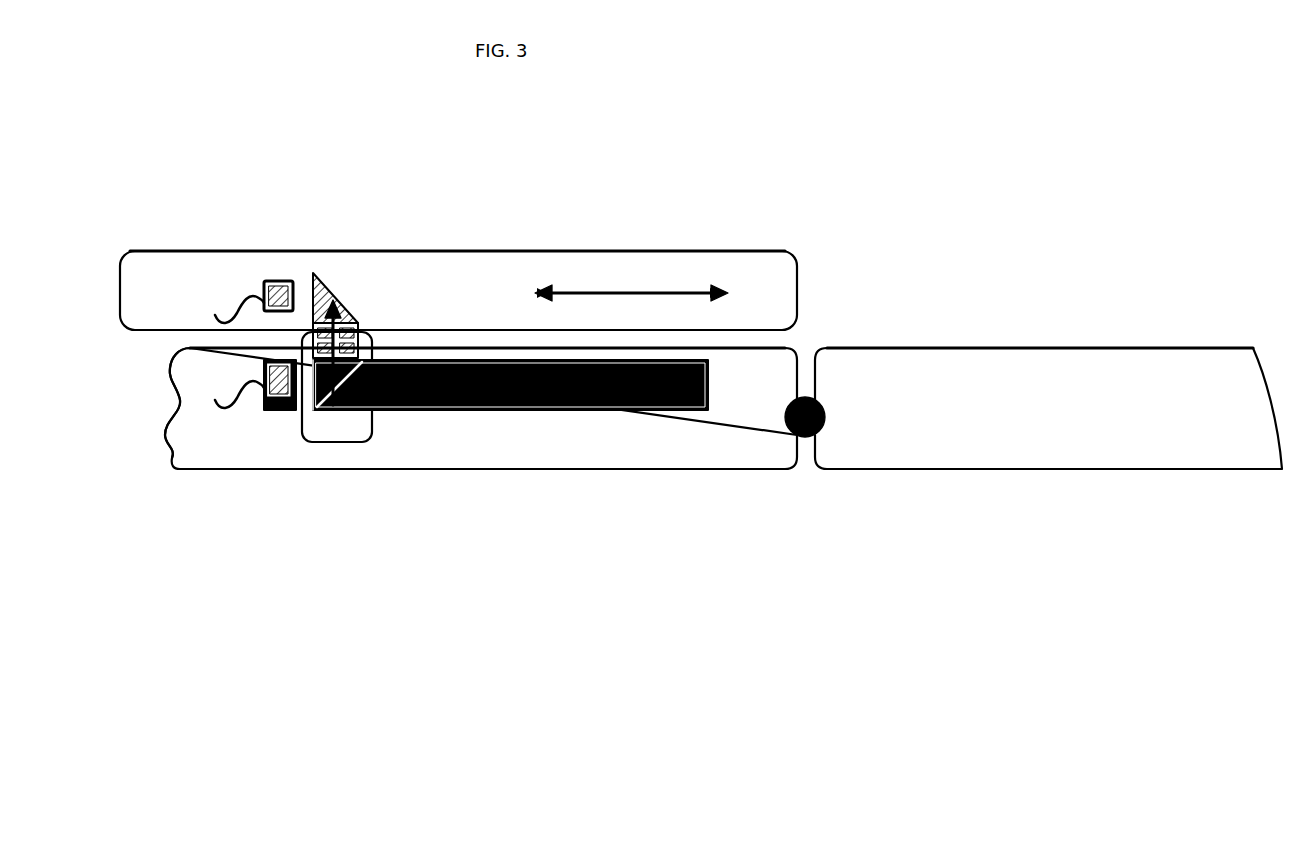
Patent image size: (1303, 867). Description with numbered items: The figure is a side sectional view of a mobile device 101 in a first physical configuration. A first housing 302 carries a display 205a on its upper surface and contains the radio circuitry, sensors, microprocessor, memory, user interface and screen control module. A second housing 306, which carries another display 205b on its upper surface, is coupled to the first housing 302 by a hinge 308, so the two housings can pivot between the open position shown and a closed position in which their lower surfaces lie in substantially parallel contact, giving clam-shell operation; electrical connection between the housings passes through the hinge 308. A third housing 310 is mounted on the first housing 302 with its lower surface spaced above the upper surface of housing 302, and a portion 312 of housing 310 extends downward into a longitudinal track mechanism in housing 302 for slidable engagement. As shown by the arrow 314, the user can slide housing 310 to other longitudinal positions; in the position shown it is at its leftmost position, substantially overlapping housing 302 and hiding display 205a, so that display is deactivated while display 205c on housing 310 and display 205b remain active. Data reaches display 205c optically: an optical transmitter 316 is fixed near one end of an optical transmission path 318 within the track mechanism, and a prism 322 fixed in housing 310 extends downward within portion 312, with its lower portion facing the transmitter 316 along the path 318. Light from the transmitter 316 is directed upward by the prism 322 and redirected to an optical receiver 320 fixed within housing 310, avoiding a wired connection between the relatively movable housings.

The mobile device 101 is at (974, 193).
The display 205a is at (760, 350).
The display 205b is at (1005, 349).
The display 205c is at (523, 252).
The first housing 302 is at (622, 443).
The housing 306 is at (978, 430).
The hinge 308 is at (805, 437).
The housing 310 is at (770, 272).
The portion 312 is at (340, 442).
The arrow 314 is at (631, 299).
The optical transmitter 316 is at (265, 440).
The optical transmission path 318 is at (510, 435).
The optical receiver 320 is at (245, 290).
The prism 322 is at (350, 298).